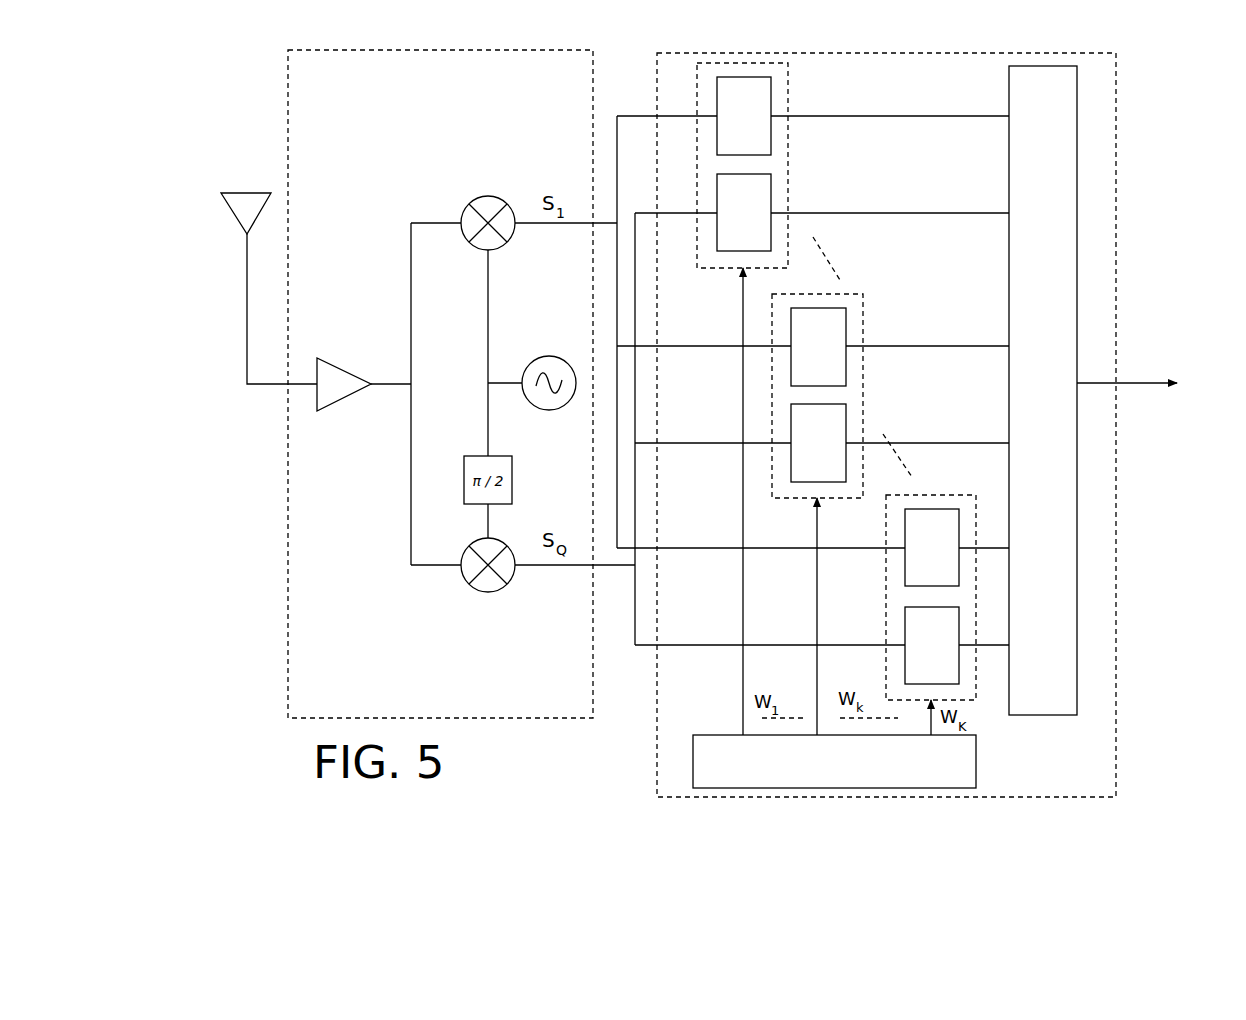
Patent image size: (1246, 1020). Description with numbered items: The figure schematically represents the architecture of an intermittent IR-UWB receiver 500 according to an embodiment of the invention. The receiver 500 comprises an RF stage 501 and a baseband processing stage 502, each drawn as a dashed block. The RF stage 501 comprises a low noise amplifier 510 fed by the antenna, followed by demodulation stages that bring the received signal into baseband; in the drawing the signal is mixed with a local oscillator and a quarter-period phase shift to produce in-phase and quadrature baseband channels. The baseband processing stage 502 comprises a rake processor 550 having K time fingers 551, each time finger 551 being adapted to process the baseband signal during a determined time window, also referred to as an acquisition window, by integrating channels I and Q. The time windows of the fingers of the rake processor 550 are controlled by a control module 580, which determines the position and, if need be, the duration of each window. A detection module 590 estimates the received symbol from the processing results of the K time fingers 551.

The receiver 500 is at (1145, 103).
The RF stage 501 is at (288, 692).
The baseband processing stage 502 is at (657, 720).
The low noise amplifier 510 is at (317, 358).
The rake processor 550 is at (808, 501).
The time finger 551 is at (788, 165).
The control module 580 is at (834, 761).
The detection module 590 is at (1093, 390).